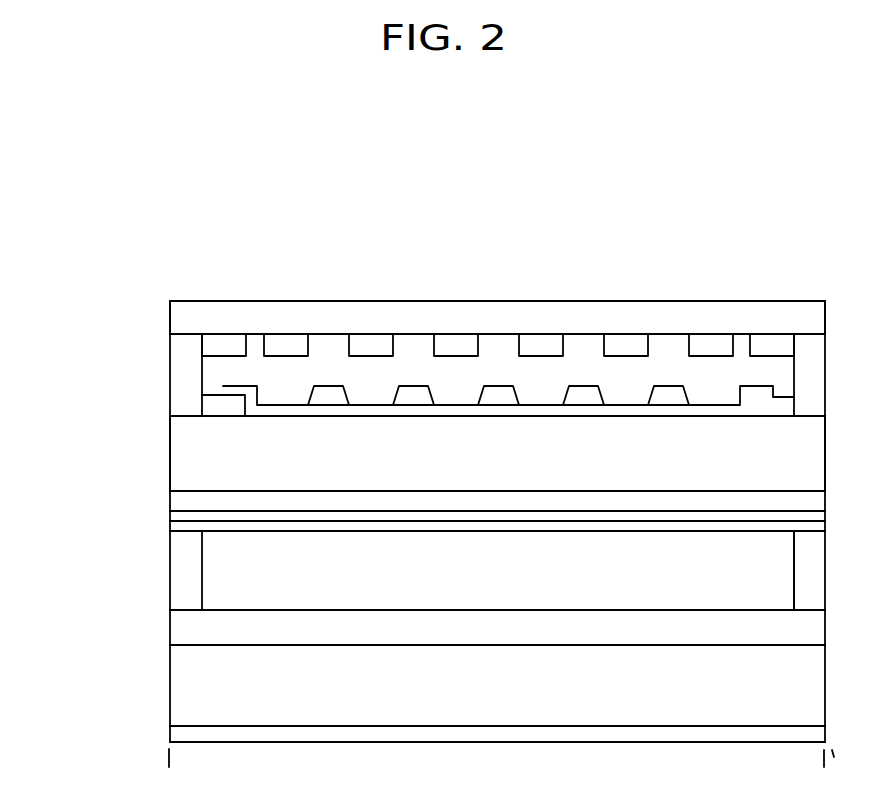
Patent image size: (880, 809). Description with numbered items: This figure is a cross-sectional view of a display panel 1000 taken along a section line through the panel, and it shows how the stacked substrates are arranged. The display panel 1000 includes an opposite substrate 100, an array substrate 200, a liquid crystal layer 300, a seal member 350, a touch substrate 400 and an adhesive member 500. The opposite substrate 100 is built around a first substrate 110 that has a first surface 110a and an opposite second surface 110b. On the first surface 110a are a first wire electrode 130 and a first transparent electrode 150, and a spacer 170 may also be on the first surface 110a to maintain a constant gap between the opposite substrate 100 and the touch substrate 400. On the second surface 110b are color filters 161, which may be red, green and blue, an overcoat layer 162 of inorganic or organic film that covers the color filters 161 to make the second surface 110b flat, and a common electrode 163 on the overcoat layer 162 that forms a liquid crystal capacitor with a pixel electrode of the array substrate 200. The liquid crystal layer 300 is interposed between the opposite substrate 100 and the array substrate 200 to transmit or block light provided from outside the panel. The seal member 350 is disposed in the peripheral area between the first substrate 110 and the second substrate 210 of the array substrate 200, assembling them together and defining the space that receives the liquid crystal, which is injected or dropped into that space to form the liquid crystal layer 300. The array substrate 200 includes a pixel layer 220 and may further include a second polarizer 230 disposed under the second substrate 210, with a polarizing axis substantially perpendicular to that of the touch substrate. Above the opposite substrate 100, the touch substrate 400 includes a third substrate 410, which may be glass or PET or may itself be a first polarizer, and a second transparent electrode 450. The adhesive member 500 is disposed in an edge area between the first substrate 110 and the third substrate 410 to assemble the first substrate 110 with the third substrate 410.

The display panel 1000 is at (368, 188).
The touch substrate 400 is at (320, 247).
The third substrate 410 is at (202, 303).
The second transparent electrode 450 is at (297, 342).
The adhesive member 500 is at (808, 345).
The opposite substrate 100 is at (67, 545).
The first substrate 110 is at (180, 447).
The first surface 110a is at (805, 416).
The second surface 110b is at (780, 490).
The first wire electrode 130 is at (210, 406).
The first transparent electrode 150 is at (323, 390).
The spacer 170 is at (202, 368).
The color filters 161 is at (180, 500).
The overcoat layer 162 is at (180, 511).
The common electrode 163 is at (180, 523).
The liquid crystal layer 300 is at (200, 581).
The seal member 350 is at (807, 598).
The array substrate 200 is at (67, 742).
The pixel layer 220 is at (180, 628).
The second substrate 210 is at (180, 676).
The second polarizer 230 is at (180, 735).